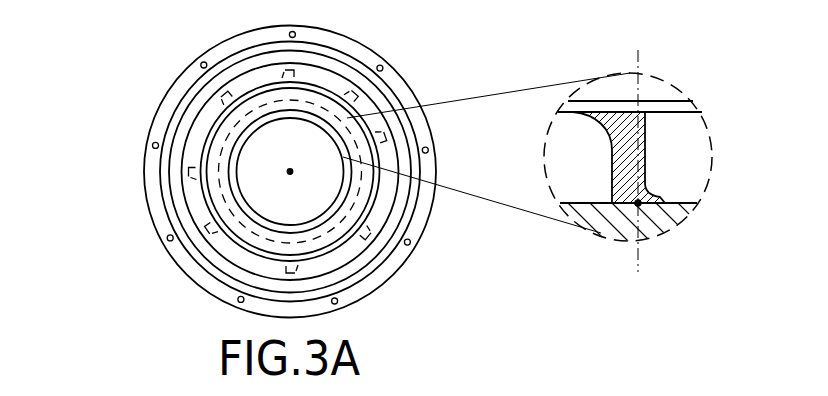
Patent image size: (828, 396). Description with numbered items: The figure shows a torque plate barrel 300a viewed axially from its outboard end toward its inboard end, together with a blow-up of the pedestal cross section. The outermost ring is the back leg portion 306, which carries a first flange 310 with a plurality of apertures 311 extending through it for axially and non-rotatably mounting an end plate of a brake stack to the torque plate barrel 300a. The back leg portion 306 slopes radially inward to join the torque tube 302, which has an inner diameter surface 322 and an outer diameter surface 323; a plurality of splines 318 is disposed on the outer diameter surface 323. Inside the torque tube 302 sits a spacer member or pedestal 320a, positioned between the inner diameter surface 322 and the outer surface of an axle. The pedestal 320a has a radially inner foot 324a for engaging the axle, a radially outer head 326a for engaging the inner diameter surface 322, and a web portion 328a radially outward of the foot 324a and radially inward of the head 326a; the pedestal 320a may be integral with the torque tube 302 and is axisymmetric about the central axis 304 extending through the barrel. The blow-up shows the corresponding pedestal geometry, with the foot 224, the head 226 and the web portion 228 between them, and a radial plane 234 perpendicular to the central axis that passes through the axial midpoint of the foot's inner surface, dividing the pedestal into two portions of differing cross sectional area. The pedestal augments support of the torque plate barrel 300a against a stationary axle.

The torque plate barrel 300a is at (146, 67).
The torque tube 302 is at (237, 243).
The central axis 304 is at (293, 171).
The back leg portion 306 is at (415, 97).
The first flange 310 is at (373, 280).
The apertures 311 is at (407, 245).
The splines 318 is at (195, 163).
The pedestal 320a is at (329, 97).
The inner diameter surface 322 is at (222, 190).
The outer diameter surface 323 is at (210, 202).
The foot 324a is at (248, 133).
The head 326a is at (255, 102).
The web portion 328a is at (235, 187).
The foot 224 is at (612, 183).
The head 226 is at (578, 118).
The web portion 228 is at (647, 153).
The radial plane 234 is at (638, 82).